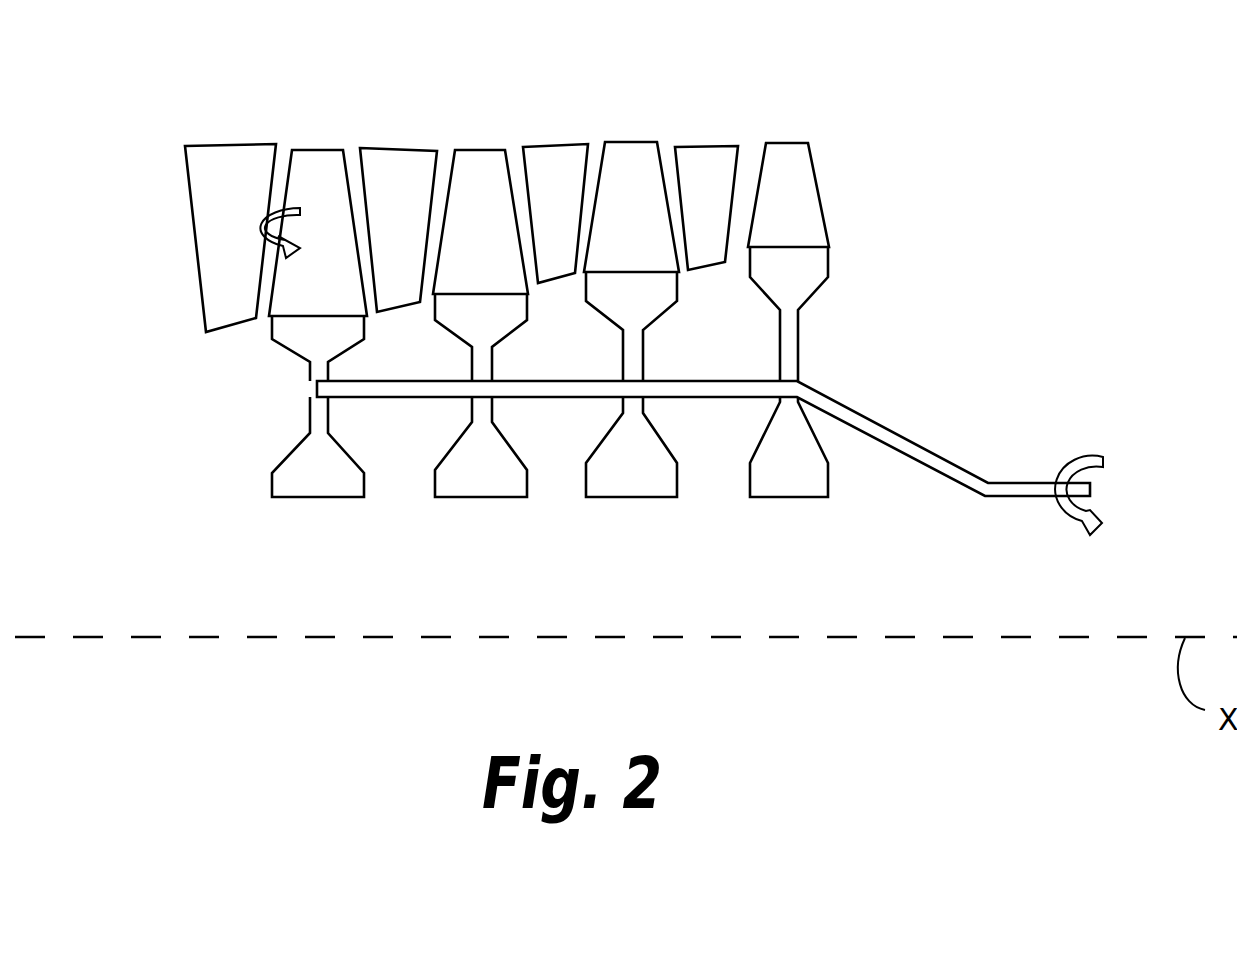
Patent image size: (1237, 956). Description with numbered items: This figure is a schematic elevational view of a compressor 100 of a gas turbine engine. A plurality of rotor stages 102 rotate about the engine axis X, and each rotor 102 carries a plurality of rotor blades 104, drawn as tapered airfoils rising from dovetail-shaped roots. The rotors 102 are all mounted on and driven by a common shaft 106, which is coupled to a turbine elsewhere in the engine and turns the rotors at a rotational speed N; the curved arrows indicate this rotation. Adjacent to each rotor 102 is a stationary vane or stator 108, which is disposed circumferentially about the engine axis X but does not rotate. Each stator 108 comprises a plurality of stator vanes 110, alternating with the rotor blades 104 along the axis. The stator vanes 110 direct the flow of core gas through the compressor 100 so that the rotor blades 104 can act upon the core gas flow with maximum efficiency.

The compressor 100 is at (1008, 70).
The rotor stage 102 is at (282, 462).
The rotor blade 104 is at (298, 181).
The shaft 106 is at (907, 439).
The stator 108 is at (166, 181).
The stator vane 110 is at (206, 298).